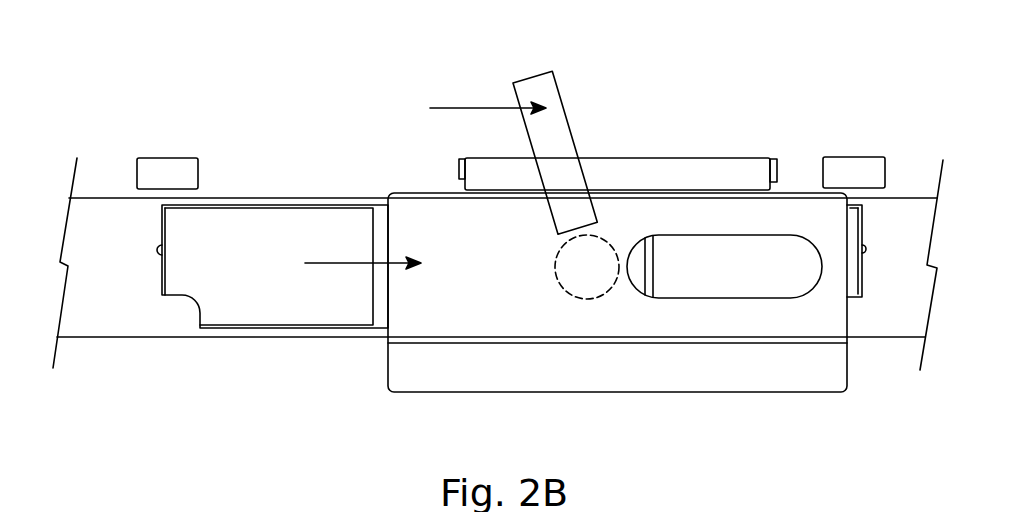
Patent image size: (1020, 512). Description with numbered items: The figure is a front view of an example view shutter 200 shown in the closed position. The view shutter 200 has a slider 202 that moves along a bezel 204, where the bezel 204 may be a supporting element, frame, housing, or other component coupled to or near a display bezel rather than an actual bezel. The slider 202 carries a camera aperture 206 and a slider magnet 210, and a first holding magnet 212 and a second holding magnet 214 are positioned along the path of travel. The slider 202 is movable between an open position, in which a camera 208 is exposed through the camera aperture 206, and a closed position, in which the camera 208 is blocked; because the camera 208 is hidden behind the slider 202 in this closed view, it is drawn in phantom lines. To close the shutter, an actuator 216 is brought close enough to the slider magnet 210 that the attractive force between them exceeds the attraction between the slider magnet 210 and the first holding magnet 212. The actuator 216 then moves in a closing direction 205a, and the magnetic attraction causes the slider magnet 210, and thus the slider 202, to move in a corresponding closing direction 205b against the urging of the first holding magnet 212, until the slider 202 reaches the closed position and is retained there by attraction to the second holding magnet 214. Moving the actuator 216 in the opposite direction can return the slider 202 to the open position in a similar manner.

The view shutter 200 is at (177, 89).
The slider 202 is at (435, 313).
The bezel 204 is at (157, 308).
The closing direction 205a is at (480, 107).
The corresponding closing direction 205b is at (366, 264).
The camera aperture 206 is at (717, 300).
The camera 208 is at (557, 282).
The slider magnet 210 is at (627, 172).
The first holding magnet 212 is at (175, 158).
The second holding magnet 214 is at (853, 158).
The actuator 216 is at (557, 137).